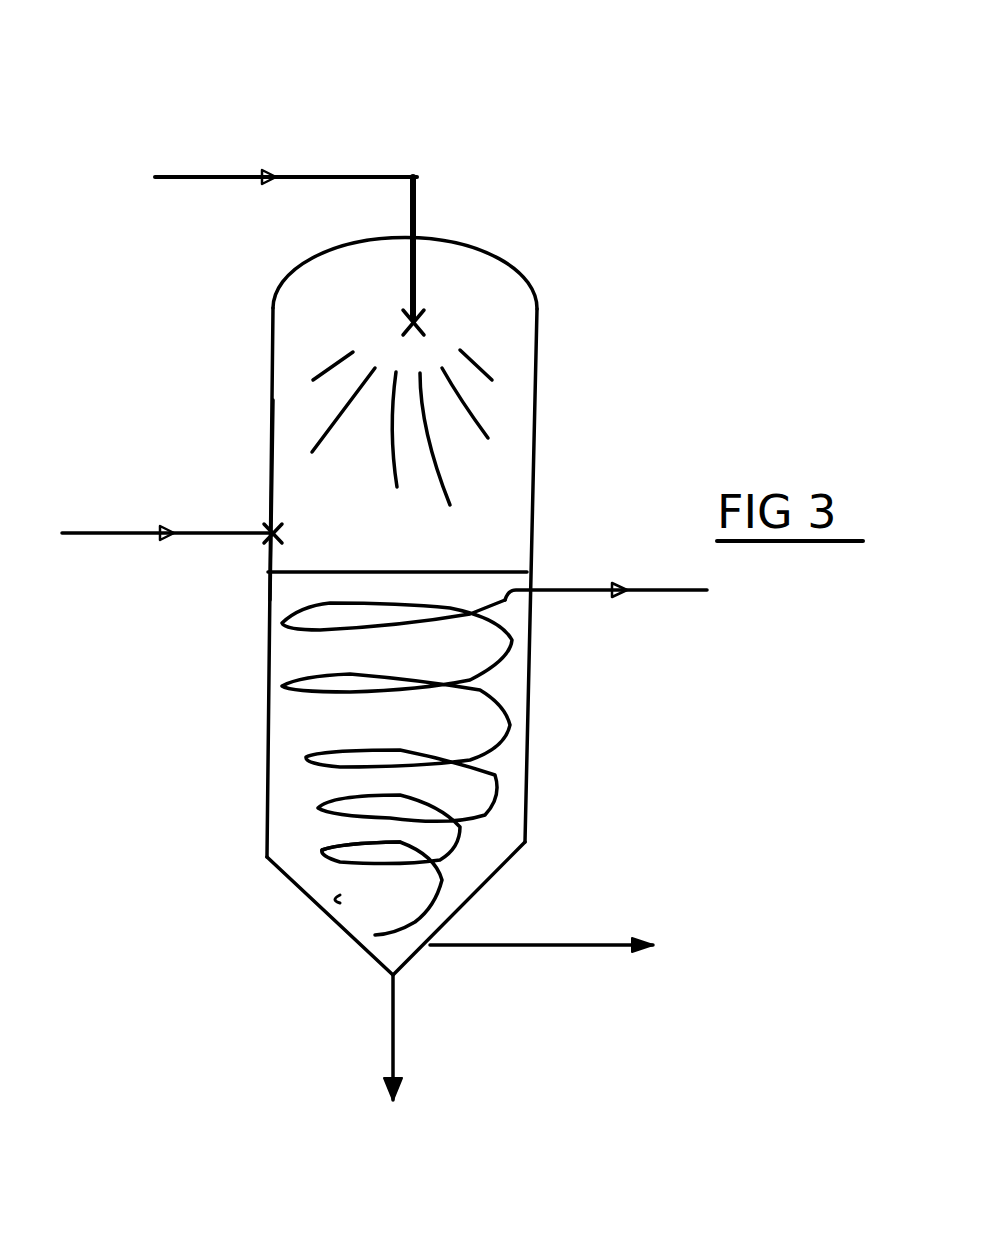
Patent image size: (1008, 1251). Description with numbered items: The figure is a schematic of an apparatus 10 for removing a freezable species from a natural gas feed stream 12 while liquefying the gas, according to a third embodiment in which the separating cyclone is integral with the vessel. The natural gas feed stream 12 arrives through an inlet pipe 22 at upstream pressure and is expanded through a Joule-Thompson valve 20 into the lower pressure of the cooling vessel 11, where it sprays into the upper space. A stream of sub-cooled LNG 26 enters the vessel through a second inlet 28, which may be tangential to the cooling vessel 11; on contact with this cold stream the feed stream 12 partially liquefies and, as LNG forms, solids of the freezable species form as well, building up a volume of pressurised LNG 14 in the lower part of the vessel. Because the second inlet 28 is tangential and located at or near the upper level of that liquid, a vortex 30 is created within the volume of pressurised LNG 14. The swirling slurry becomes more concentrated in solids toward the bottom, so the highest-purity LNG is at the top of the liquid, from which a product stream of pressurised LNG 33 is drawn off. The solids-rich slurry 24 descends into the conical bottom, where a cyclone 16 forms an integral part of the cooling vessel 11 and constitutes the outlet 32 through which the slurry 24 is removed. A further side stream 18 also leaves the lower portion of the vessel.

The apparatus 10 is at (747, 363).
The cooling vessel 11 is at (535, 515).
The natural gas feed stream 12 is at (200, 173).
The volume of pressurised LNG 14 is at (503, 815).
The cyclone 16 is at (333, 898).
The liquid outlet 18 is at (590, 940).
The Joule-Thompson valve 20 is at (417, 327).
The inlet pipe 22 is at (417, 237).
The slurry 24 is at (390, 1015).
The sub-cooled LNG stream 26 is at (100, 537).
The second inlet 28 is at (268, 540).
The vortex 30 is at (462, 690).
The outlet 32 is at (361, 846).
The product stream of pressurised LNG 33 is at (677, 593).